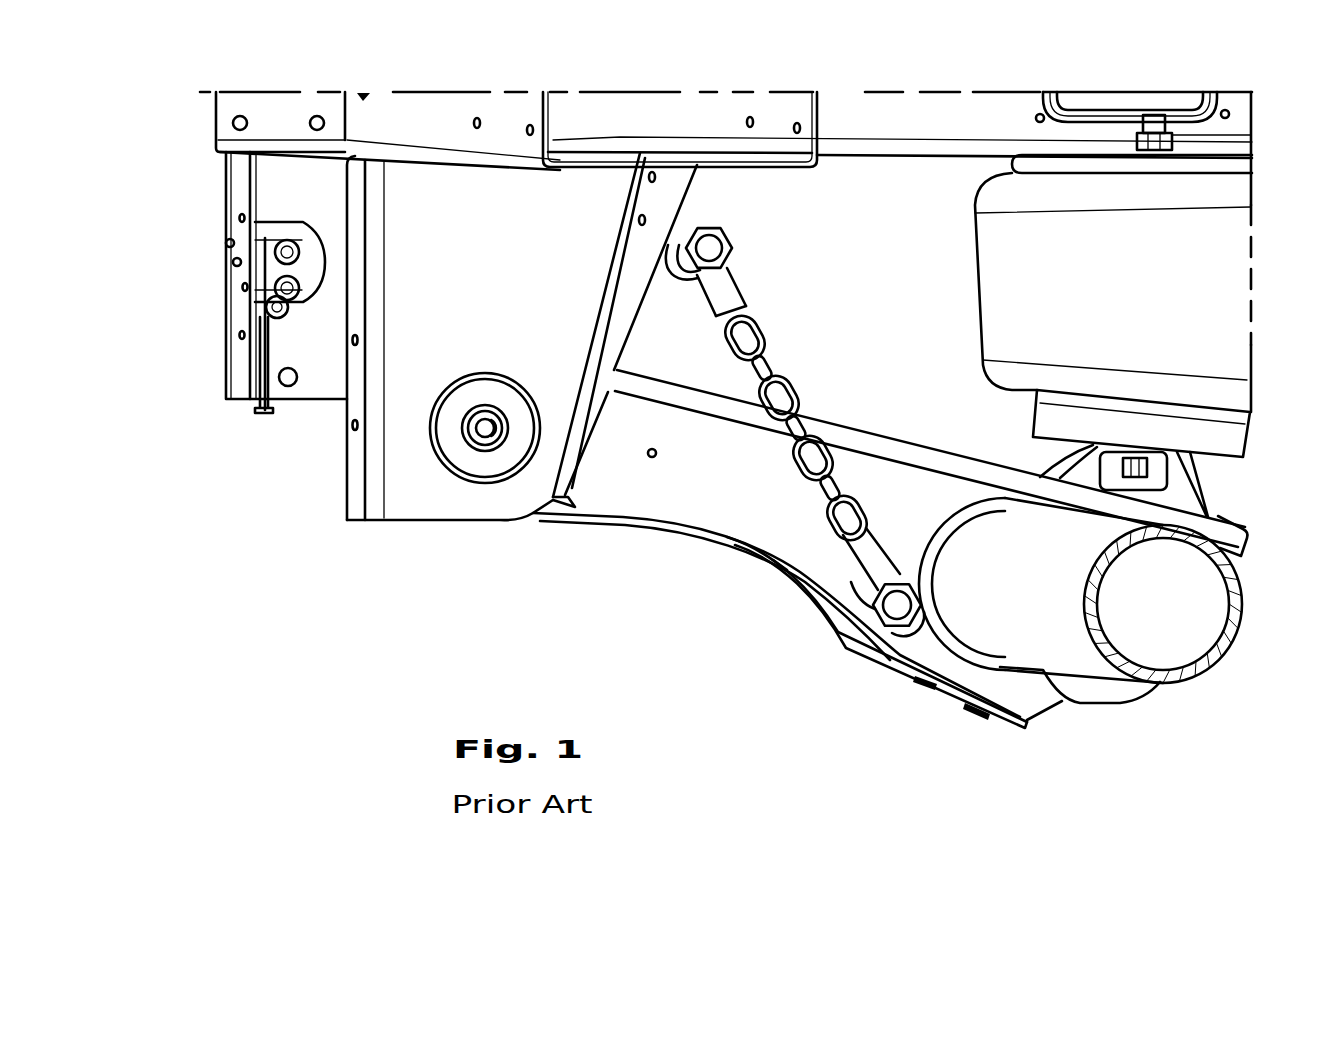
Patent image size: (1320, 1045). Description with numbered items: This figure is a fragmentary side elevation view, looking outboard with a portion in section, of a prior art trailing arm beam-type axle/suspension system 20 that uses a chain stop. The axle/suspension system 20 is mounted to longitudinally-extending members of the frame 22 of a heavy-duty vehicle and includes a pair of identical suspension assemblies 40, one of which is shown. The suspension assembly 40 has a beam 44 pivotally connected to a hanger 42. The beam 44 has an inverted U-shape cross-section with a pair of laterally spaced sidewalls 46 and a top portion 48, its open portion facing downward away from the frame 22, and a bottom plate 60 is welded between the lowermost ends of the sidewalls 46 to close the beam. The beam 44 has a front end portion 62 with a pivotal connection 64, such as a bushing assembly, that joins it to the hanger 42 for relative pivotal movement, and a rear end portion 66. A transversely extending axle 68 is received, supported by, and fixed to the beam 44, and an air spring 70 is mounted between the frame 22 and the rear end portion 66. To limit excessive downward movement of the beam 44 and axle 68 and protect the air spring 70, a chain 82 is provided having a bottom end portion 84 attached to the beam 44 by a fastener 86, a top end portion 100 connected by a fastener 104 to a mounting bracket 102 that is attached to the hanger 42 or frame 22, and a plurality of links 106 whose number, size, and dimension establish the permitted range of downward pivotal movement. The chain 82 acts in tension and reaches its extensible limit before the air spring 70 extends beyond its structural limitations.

The axle/suspension system 20 is at (300, 546).
The frame 22 is at (826, 118).
The suspension assembly 40 is at (1065, 724).
The hanger 42 is at (509, 295).
The beam 44 is at (729, 463).
The sidewalls 46 is at (733, 510).
The top portion 48 is at (993, 473).
The bottom plate 60 is at (833, 620).
The front end portion 62 is at (567, 513).
The pivotal connection 64 is at (487, 463).
The rear end portion 66 is at (1233, 524).
The axle 68 is at (1041, 607).
The air spring 70 is at (1144, 290).
The chain 82 is at (794, 415).
The bottom end portion 84 is at (899, 637).
The fastener 86 is at (893, 610).
The top end portion 100 is at (751, 264).
The mounting bracket 102 is at (722, 232).
The fastener 104 is at (713, 243).
The links 106 is at (745, 307).